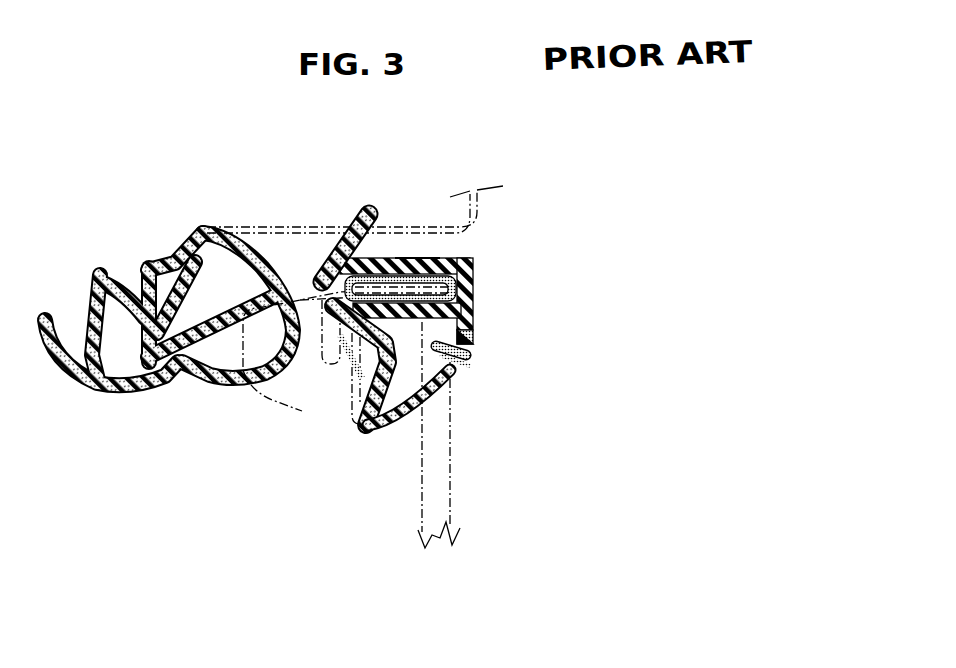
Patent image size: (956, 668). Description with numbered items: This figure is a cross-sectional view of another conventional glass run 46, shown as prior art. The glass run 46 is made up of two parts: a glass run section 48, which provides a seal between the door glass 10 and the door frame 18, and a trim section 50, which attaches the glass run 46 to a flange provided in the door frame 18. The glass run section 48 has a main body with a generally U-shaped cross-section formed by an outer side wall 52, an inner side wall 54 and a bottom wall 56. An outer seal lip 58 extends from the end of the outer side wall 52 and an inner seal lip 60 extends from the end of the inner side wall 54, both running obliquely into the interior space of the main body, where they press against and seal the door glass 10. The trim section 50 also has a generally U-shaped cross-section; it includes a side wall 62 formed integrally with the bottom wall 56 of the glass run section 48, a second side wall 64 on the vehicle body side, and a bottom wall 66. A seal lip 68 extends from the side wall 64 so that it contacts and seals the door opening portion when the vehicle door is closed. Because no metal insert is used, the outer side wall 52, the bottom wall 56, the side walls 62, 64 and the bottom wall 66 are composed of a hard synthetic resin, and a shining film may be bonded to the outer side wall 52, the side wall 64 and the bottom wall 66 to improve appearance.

The door glass 10 is at (453, 460).
The door frame 18 is at (262, 405).
The glass run 46 is at (478, 249).
The glass run section 48 is at (383, 428).
The trim section 50 is at (467, 270).
The outer side wall 52 is at (463, 338).
The inner side wall 54 is at (360, 380).
The bottom wall 56 is at (452, 358).
The outer seal lip 58 is at (462, 372).
The inner seal lip 60 is at (415, 412).
The side wall 62 is at (413, 300).
The side wall 64 is at (406, 258).
The bottom wall 66 is at (468, 297).
The seal lip 68 is at (350, 206).